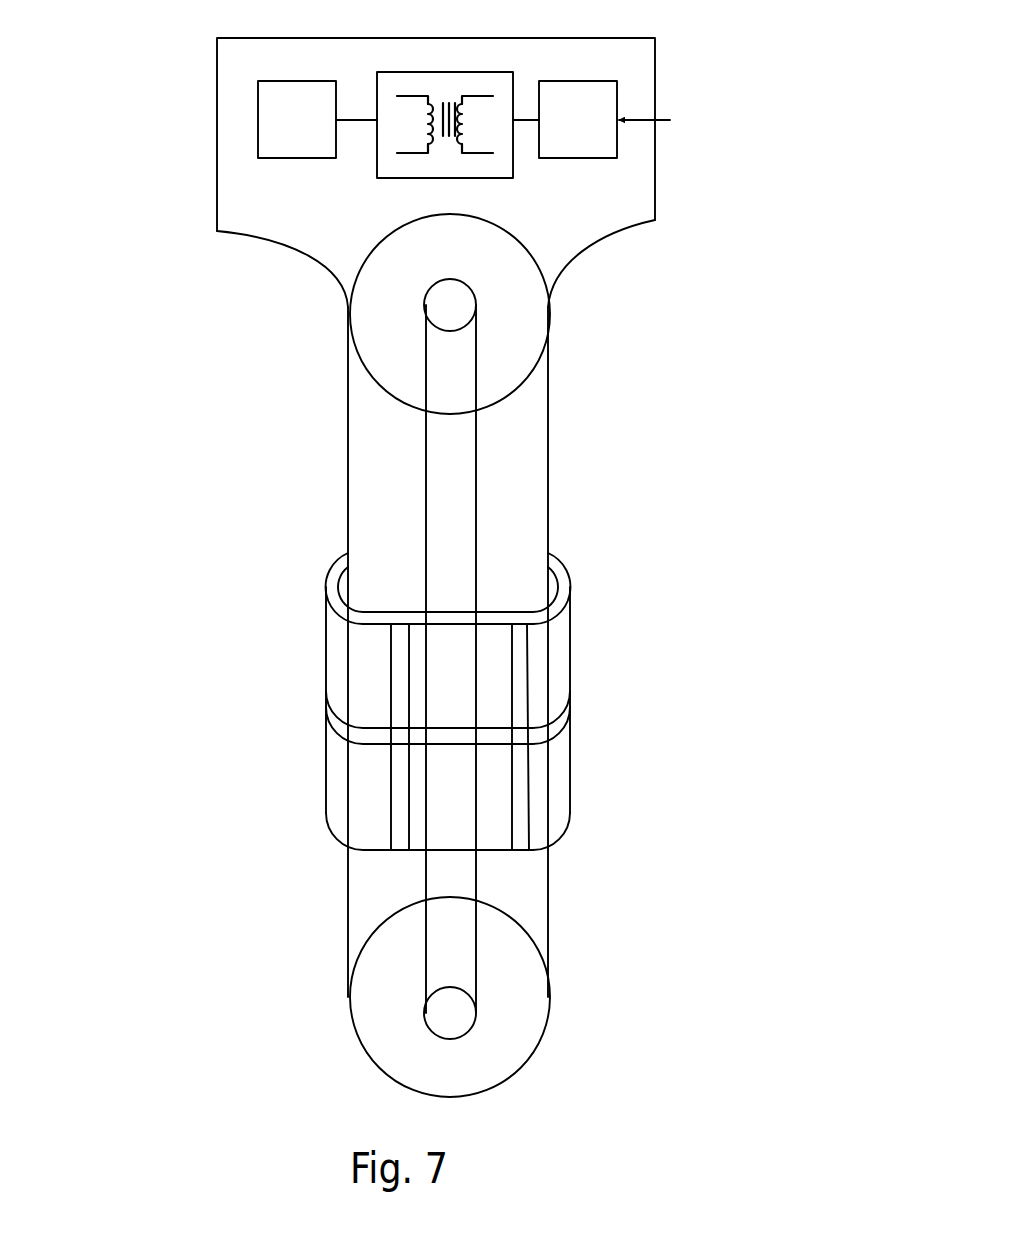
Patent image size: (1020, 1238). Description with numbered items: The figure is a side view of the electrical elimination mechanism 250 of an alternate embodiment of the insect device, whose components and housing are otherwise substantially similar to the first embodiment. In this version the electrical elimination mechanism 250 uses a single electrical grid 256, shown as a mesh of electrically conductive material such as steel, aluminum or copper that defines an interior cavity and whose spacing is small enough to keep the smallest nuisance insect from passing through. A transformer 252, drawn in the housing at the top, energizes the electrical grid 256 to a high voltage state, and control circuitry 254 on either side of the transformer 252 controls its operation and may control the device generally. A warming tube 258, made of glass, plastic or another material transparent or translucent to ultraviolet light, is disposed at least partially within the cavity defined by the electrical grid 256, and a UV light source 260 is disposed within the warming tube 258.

The electrical elimination mechanism 250 is at (148, 152).
The transformer 252 is at (460, 71).
The control circuitry 254 is at (297, 141).
The electrical grid 256 is at (324, 657).
The warming tube 258 is at (346, 433).
The UV light source 260 is at (478, 492).